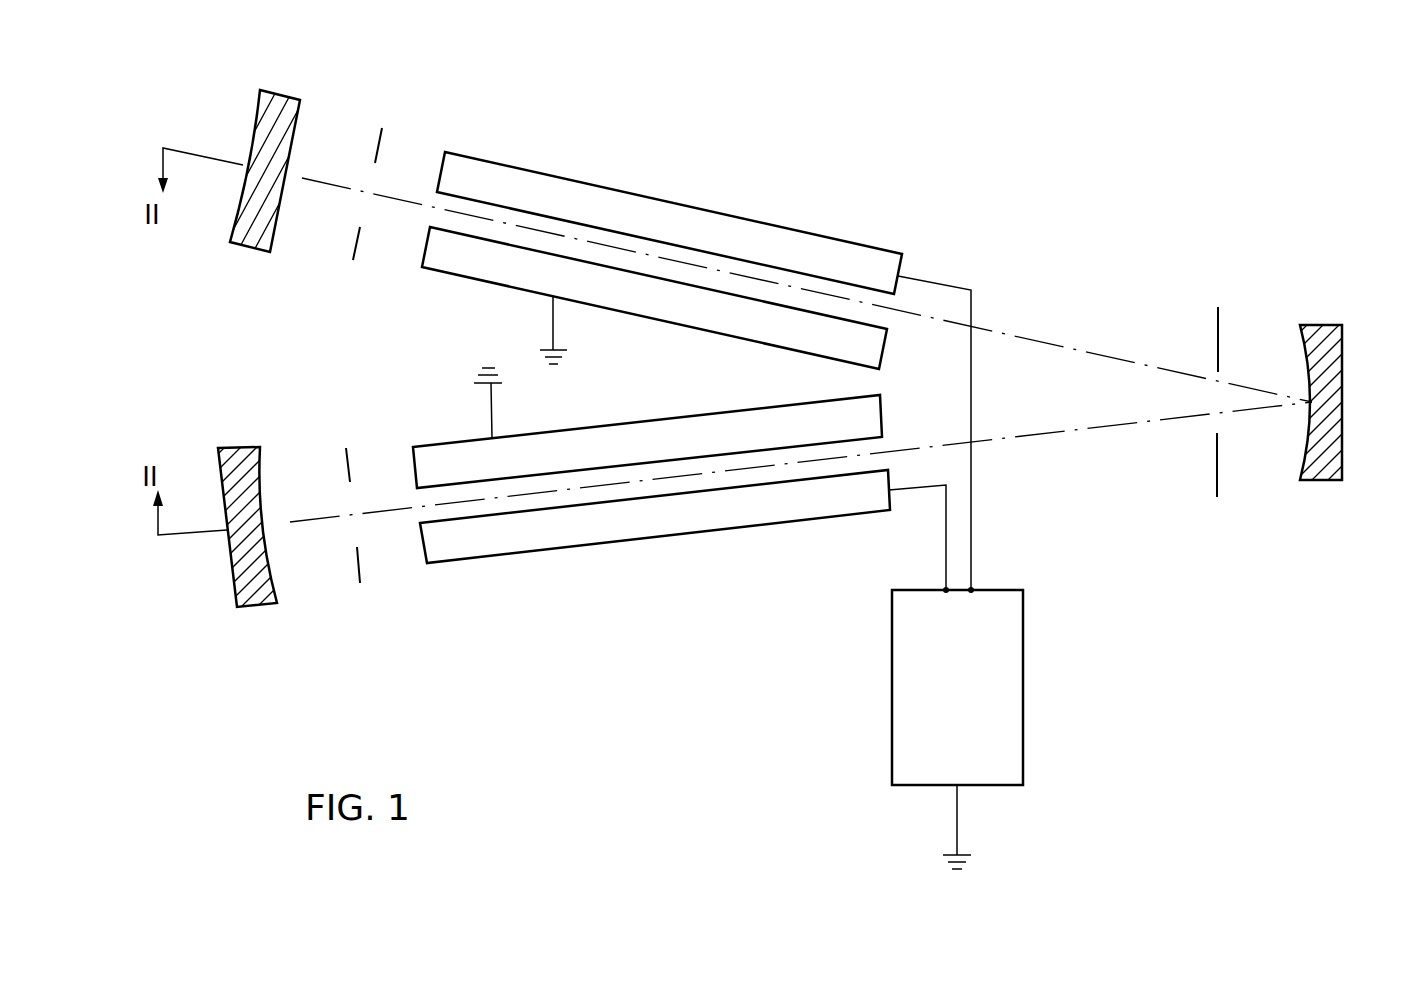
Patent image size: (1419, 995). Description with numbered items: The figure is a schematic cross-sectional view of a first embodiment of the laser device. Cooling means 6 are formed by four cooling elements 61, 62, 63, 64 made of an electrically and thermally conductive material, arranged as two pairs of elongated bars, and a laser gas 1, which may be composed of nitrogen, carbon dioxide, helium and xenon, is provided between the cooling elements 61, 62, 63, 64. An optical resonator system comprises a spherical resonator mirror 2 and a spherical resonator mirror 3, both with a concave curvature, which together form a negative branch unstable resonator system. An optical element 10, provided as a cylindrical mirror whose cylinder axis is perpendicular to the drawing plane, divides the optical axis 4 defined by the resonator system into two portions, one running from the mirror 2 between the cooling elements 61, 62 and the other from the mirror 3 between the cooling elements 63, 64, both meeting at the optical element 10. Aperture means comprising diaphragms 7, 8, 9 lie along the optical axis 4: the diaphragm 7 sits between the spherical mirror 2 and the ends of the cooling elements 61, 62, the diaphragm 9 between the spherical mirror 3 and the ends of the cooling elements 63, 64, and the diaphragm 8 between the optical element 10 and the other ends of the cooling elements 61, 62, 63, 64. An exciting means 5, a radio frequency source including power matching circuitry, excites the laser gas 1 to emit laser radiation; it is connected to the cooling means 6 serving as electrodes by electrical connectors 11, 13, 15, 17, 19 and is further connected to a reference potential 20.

The laser gas 1 is at (651, 522).
The spherical resonator mirror 2 is at (287, 92).
The spherical resonator mirror 3 is at (265, 604).
The optical axis 4 is at (1050, 347).
The exciting means 5 is at (947, 706).
The cooling means 6 is at (700, 382).
The diaphragm 7 is at (383, 145).
The diaphragm 8 is at (1219, 318).
The diaphragm 9 is at (359, 570).
The optical element 10 is at (1342, 347).
The electrical connector 11 is at (946, 549).
The electrical connector 13 is at (490, 410).
The electrical connector 15 is at (556, 337).
The electrical connector 17 is at (973, 552).
The electrical connector 19 is at (959, 822).
The reference potential 20 is at (955, 886).
The cooling element 61 is at (565, 218).
The cooling element 62 is at (610, 265).
The cooling element 63 is at (777, 483).
The cooling element 64 is at (643, 463).